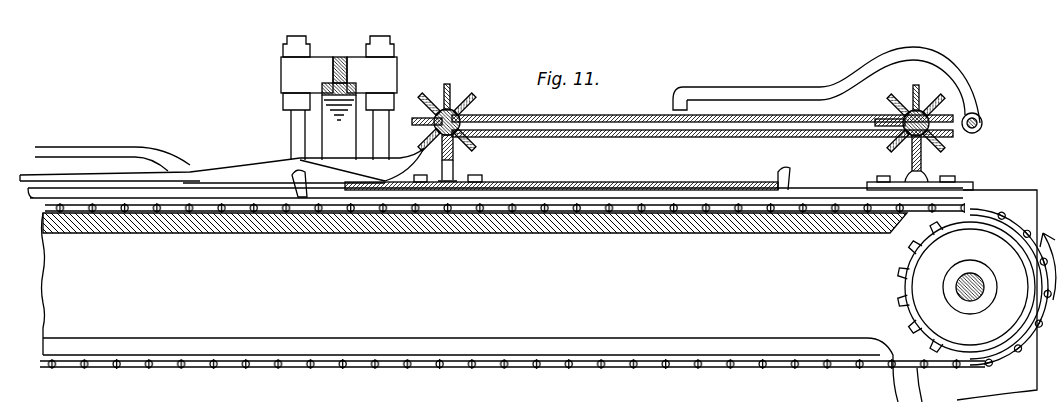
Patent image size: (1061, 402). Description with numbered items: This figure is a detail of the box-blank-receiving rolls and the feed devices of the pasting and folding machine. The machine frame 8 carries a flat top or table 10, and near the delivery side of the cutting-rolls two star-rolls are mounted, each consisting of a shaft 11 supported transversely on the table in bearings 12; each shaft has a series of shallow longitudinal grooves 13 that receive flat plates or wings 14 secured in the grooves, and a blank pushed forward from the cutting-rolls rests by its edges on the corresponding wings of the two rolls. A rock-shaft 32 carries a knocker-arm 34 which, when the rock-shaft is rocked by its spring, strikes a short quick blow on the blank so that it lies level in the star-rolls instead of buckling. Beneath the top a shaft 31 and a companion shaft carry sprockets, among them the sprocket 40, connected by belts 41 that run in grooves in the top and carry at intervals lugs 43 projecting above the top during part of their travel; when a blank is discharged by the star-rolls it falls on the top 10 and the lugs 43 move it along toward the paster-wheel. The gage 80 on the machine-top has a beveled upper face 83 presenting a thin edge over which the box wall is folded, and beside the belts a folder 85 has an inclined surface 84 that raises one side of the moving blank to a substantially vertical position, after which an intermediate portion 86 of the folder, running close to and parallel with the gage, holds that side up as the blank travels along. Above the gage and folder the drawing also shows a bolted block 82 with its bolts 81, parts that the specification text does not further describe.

The frame 8 is at (475, 289).
The flat top or table 10 is at (990, 193).
The shaft 11 is at (455, 110).
The bearings 12 is at (451, 167).
The shallow longitudinal grooves 13 is at (464, 120).
The flat plates or wings 14 is at (416, 110).
The shaft 31 is at (968, 300).
The rock-shaft 32 is at (983, 129).
The knocker-arm 34 is at (768, 93).
The sprocket 40 is at (966, 286).
The belts 41 is at (436, 208).
The lugs 43 is at (790, 189).
The gage 80 is at (328, 166).
The bolts 81 is at (297, 127).
The clamp block 82 is at (339, 108).
The beveled upper faces 83 is at (116, 175).
The inclined surface 84 is at (170, 162).
The folder 85 is at (231, 186).
The intermediate portion 86 is at (57, 152).